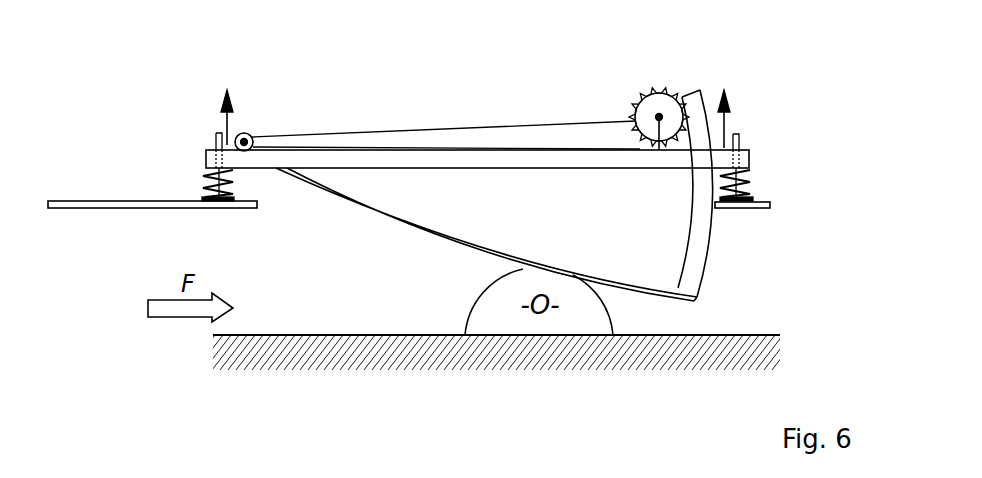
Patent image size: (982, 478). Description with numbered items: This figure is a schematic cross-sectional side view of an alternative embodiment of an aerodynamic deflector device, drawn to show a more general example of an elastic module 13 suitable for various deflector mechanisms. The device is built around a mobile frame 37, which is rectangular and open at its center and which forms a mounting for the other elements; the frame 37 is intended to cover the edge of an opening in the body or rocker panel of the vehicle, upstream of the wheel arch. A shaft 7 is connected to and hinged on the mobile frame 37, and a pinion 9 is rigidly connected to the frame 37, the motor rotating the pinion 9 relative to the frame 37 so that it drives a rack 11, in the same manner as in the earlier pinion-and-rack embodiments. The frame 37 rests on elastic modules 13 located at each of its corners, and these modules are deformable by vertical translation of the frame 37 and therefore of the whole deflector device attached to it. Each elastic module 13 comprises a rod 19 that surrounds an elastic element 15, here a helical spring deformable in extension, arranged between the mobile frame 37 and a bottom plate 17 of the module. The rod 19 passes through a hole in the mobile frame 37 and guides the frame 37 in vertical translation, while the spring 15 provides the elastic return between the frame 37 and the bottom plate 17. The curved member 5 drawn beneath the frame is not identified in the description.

The curved guide ramp 5 is at (440, 238).
The shaft 7 is at (247, 133).
The pinion 9 is at (663, 92).
The rack 11 is at (700, 89).
The elastic module 13 is at (485, 150).
The elastic element 15 is at (742, 182).
The bottom plate 17 is at (745, 200).
The rod 19 is at (742, 138).
The mobile frame 37 is at (351, 150).